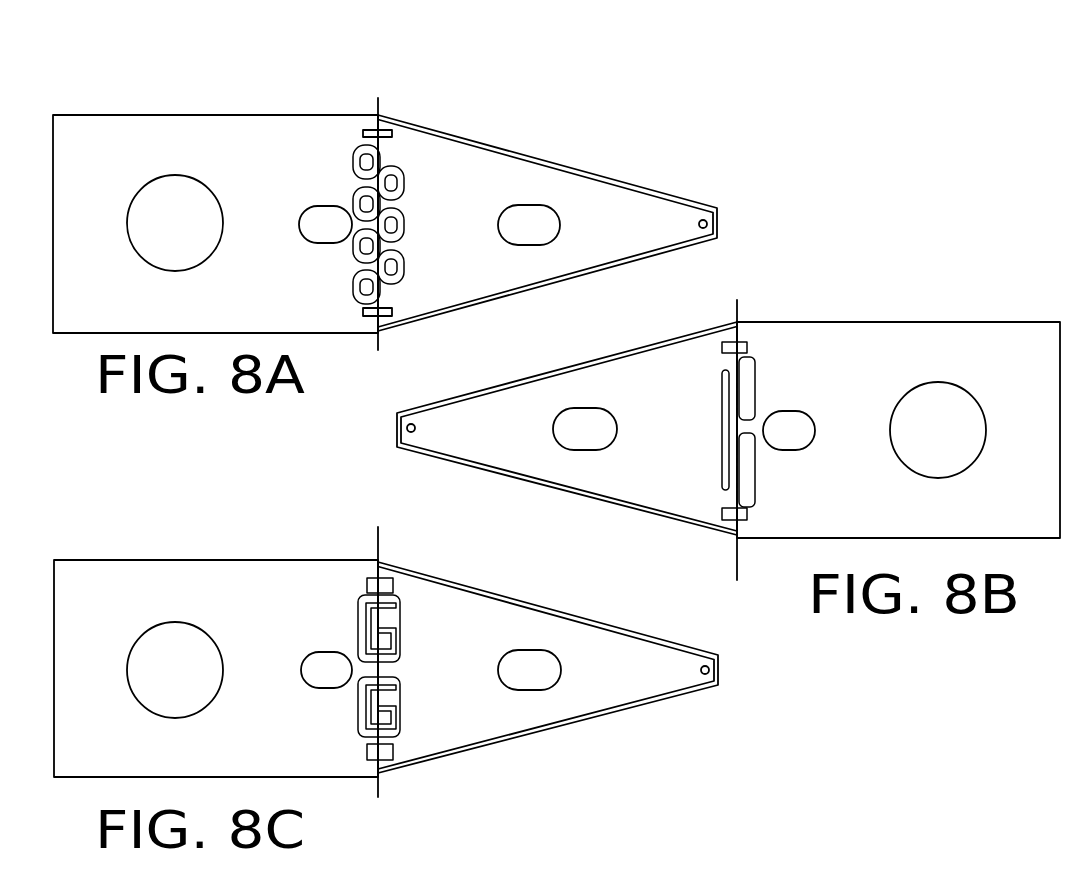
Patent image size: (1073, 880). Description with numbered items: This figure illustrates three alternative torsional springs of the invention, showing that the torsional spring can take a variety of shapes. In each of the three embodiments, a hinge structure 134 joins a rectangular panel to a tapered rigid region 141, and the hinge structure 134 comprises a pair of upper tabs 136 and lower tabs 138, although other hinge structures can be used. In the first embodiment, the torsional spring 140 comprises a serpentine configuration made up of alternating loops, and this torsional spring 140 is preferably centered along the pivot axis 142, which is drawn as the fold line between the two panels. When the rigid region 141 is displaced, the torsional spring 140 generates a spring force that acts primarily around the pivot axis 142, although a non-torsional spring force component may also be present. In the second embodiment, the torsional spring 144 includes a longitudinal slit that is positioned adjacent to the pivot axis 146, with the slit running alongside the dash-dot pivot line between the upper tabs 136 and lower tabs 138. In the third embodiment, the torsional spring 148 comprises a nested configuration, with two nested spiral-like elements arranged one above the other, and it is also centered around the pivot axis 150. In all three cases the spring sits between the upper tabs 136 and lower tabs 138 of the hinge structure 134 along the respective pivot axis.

In FIG. 8A, the hinge structure 134 is at (387, 333).
In FIG. 8A, the upper tabs 136 is at (385, 140).
In FIG. 8A, the lower tabs 138 is at (372, 125).
In FIG. 8A, the torsional spring 140 is at (400, 182).
In FIG. 8A, the rigid region 141 is at (623, 213).
In FIG. 8A, the pivot axis 142 is at (377, 98).
In FIG. 8B, the torsional spring 144 is at (730, 428).
In FIG. 8B, the pivot axis 146 is at (737, 560).
In FIG. 8C, the torsional spring 148 is at (400, 668).
In FIG. 8C, the pivot axis 150 is at (377, 550).